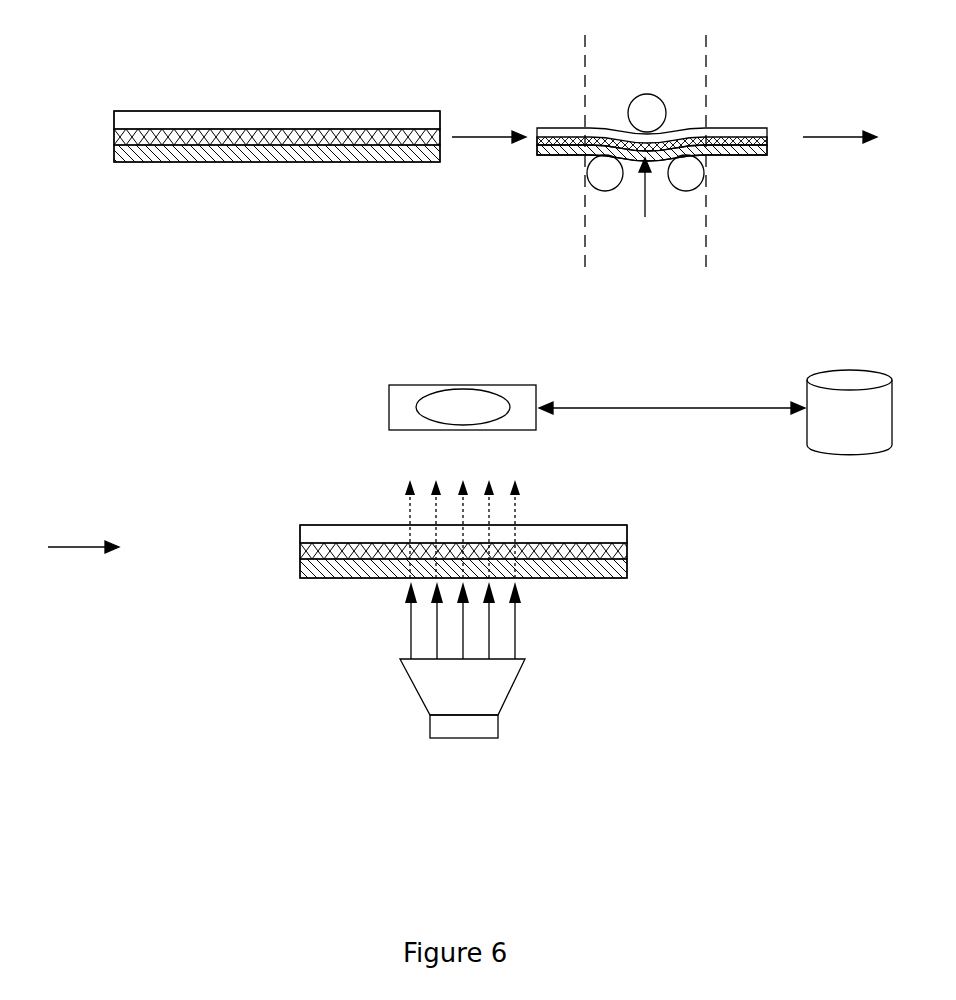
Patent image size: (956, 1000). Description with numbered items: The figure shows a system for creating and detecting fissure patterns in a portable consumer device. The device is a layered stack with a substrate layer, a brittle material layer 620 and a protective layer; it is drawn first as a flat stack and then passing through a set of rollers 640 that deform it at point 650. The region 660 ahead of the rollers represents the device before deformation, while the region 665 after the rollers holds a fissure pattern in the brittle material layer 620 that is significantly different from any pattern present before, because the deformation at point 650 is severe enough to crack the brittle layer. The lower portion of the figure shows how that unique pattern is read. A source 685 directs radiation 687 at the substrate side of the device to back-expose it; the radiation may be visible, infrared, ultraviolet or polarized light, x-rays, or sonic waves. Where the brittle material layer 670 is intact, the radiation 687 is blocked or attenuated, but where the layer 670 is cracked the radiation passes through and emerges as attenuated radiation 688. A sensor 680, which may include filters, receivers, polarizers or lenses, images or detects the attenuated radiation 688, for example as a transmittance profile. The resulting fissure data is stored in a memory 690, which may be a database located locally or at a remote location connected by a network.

The brittle material layer 620 is at (114, 135).
The rollers 640 is at (648, 94).
The deformation point 650 is at (645, 203).
The region before the rollers 660 is at (559, 152).
The region after the rollers 665 is at (732, 152).
The brittle material layer 670 is at (300, 553).
The sensor 680 is at (507, 385).
The source 685 is at (515, 678).
The radiation 687 is at (515, 613).
The attenuated radiation 688 is at (515, 505).
The memory 690 is at (849, 412).